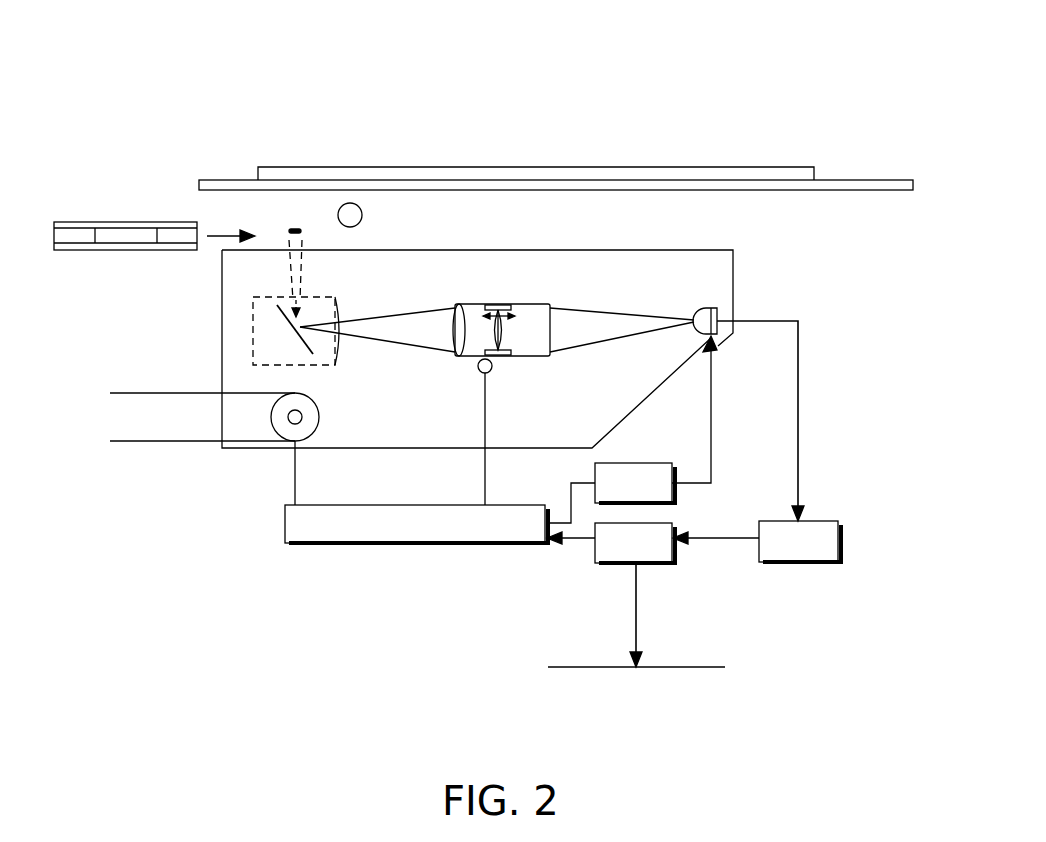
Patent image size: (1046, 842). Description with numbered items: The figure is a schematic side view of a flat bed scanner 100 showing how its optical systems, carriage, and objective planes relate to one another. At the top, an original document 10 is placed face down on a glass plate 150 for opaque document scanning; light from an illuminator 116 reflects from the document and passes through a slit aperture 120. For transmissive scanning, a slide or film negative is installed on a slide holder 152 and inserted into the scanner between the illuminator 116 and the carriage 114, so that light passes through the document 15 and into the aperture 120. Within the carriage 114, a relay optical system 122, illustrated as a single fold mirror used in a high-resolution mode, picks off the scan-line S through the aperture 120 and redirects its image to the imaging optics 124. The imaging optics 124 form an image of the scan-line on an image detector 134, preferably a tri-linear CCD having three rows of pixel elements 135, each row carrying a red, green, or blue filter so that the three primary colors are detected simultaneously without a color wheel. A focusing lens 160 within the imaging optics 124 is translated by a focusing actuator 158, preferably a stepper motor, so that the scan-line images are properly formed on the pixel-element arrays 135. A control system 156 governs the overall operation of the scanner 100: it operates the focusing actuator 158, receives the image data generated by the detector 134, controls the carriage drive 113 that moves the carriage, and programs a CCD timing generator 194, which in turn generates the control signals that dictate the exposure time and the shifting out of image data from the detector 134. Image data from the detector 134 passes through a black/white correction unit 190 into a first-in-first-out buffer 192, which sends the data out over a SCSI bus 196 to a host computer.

The flat bed scanner 100 is at (757, 58).
The original document 10 is at (748, 166).
The glass plate 150 is at (840, 179).
The slide holder 152 is at (86, 228).
The document 15 is at (123, 228).
The scan-line S is at (296, 225).
The illuminator 116 is at (355, 203).
The slit aperture 120 is at (302, 246).
The carriage 114 is at (680, 250).
The relay optical system 122 is at (253, 330).
The imaging optics 124 is at (520, 304).
The focusing lens 160 is at (496, 322).
The focusing actuator 158 is at (492, 368).
The image detector 134 is at (722, 306).
The rows of pixel elements 135 is at (690, 312).
The carriage drive 113 is at (309, 398).
The control system 156 is at (285, 524).
The CCD timing generator 194 is at (674, 497).
The first-in-first-out buffer 192 is at (676, 556).
The black/white correction unit 190 is at (840, 540).
The SCSI bus 196 is at (572, 668).